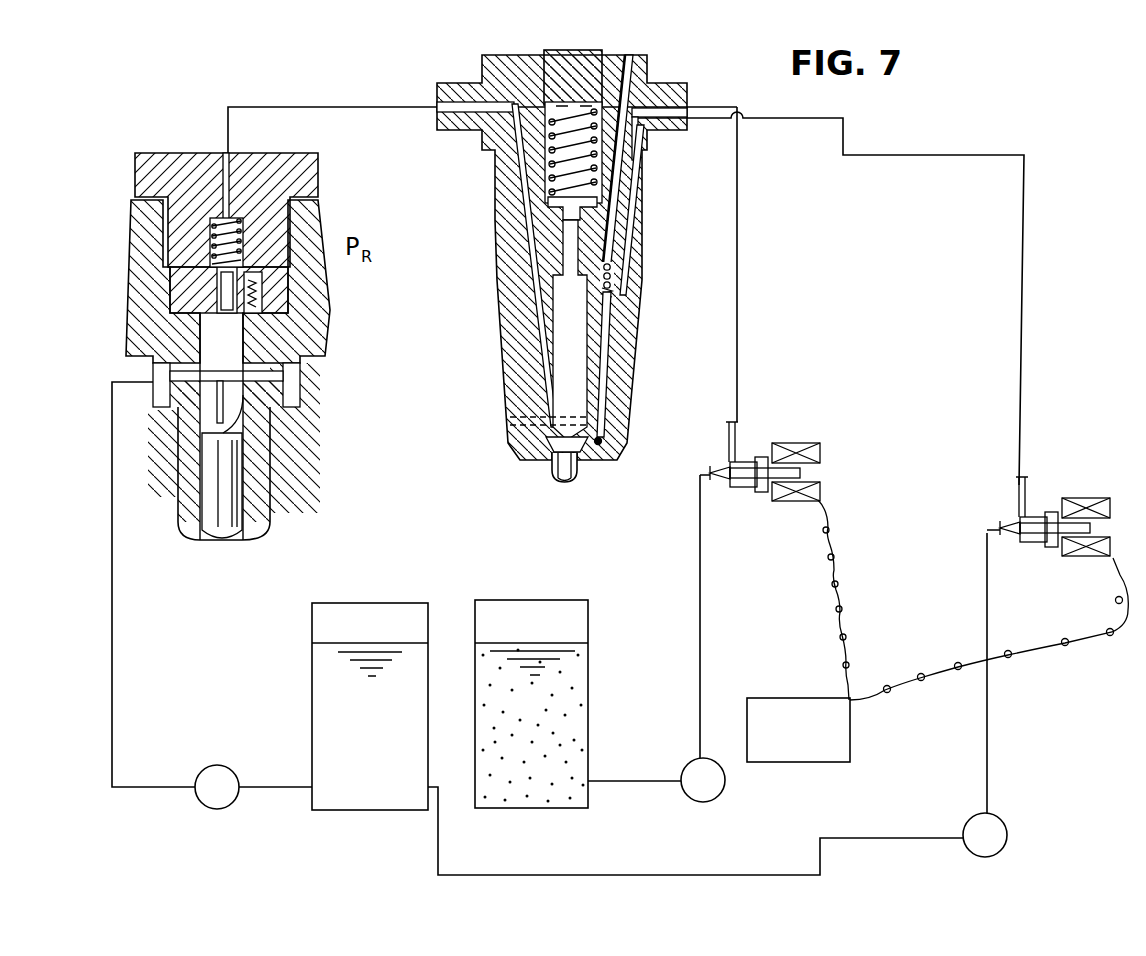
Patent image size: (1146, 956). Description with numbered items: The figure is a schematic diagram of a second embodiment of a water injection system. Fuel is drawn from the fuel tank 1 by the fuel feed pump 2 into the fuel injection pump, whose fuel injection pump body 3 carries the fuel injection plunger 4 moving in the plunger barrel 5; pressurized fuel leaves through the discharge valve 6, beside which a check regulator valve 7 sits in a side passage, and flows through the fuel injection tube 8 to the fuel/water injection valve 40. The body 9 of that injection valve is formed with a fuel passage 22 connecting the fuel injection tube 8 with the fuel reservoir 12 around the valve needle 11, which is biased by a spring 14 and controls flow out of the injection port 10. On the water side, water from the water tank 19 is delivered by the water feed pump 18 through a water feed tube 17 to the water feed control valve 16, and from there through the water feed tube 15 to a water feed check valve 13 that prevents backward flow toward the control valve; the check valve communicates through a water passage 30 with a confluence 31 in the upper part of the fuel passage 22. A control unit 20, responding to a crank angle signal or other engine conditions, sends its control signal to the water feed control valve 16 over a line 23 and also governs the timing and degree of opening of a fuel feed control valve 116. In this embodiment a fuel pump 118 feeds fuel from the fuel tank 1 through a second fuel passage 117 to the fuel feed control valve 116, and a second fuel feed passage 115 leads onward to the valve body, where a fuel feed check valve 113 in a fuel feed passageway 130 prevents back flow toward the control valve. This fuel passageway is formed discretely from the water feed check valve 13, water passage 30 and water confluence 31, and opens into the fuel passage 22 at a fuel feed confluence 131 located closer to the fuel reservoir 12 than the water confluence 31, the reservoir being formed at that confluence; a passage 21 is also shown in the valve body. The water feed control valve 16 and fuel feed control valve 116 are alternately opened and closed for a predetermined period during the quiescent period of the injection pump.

The fuel tank 1 is at (312, 700).
The fuel feed pump 2 is at (205, 767).
The fuel injection pump body 3 is at (130, 322).
The fuel injection plunger 4 is at (200, 530).
The plunger barrel 5 is at (180, 497).
The discharge valve 6 is at (200, 222).
The check regulator valve 7 is at (255, 290).
The fuel injection tube 8 is at (300, 106).
The body of the injection valve 9 is at (497, 186).
The injection port 10 is at (552, 478).
The valve needle 11 is at (625, 395).
The fuel reservoir 12 is at (520, 448).
The water feed check valve 13 is at (637, 283).
The spring 14 is at (632, 200).
The water feed tube 15 is at (737, 252).
The water feed control valve 16 is at (728, 492).
The water feed tube 17 is at (700, 655).
The water feed pump 18 is at (708, 802).
The water tank 19 is at (577, 808).
The control unit 20 is at (818, 763).
The passage 21 is at (620, 150).
The fuel passage 22 is at (505, 205).
The line 23 is at (843, 575).
The water passage 30 is at (610, 353).
The confluence 31 is at (507, 418).
The fuel/water injection valve 40 is at (560, 274).
The fuel feed check valve 113 is at (640, 262).
The second fuel feed passage 115 is at (1024, 295).
The fuel feed control valve 116 is at (1012, 545).
The second fuel passage 117 is at (987, 740).
The fuel pump 118 is at (1007, 836).
The fuel feed passageway 130 is at (615, 378).
The fuel feed confluence 131 is at (606, 445).